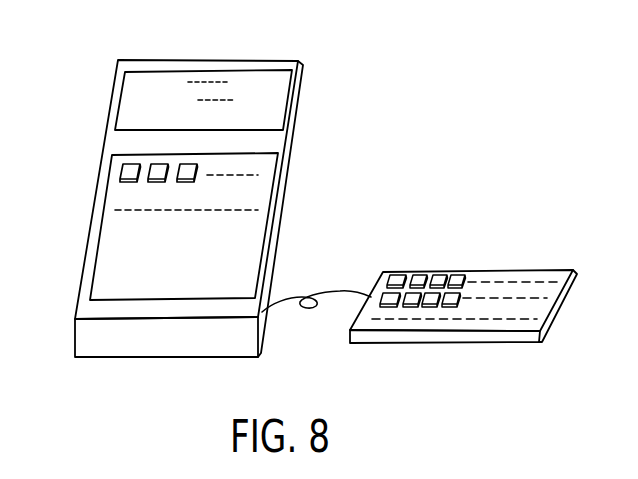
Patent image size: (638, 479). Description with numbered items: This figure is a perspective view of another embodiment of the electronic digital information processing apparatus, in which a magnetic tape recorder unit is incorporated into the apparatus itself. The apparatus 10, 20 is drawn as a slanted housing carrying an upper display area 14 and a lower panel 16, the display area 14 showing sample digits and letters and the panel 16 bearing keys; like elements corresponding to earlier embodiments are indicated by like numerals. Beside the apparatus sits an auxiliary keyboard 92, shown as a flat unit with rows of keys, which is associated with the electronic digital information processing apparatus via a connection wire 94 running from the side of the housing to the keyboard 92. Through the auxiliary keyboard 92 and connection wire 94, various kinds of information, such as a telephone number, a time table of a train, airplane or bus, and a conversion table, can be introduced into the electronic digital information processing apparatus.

The portable data terminal 10 is at (240, 193).
The housing 20 is at (278, 48).
The display 14 is at (133, 120).
The keyboard panel 16 is at (132, 198).
The connection wire 94 is at (327, 293).
The auxiliary keyboard 92 is at (518, 278).